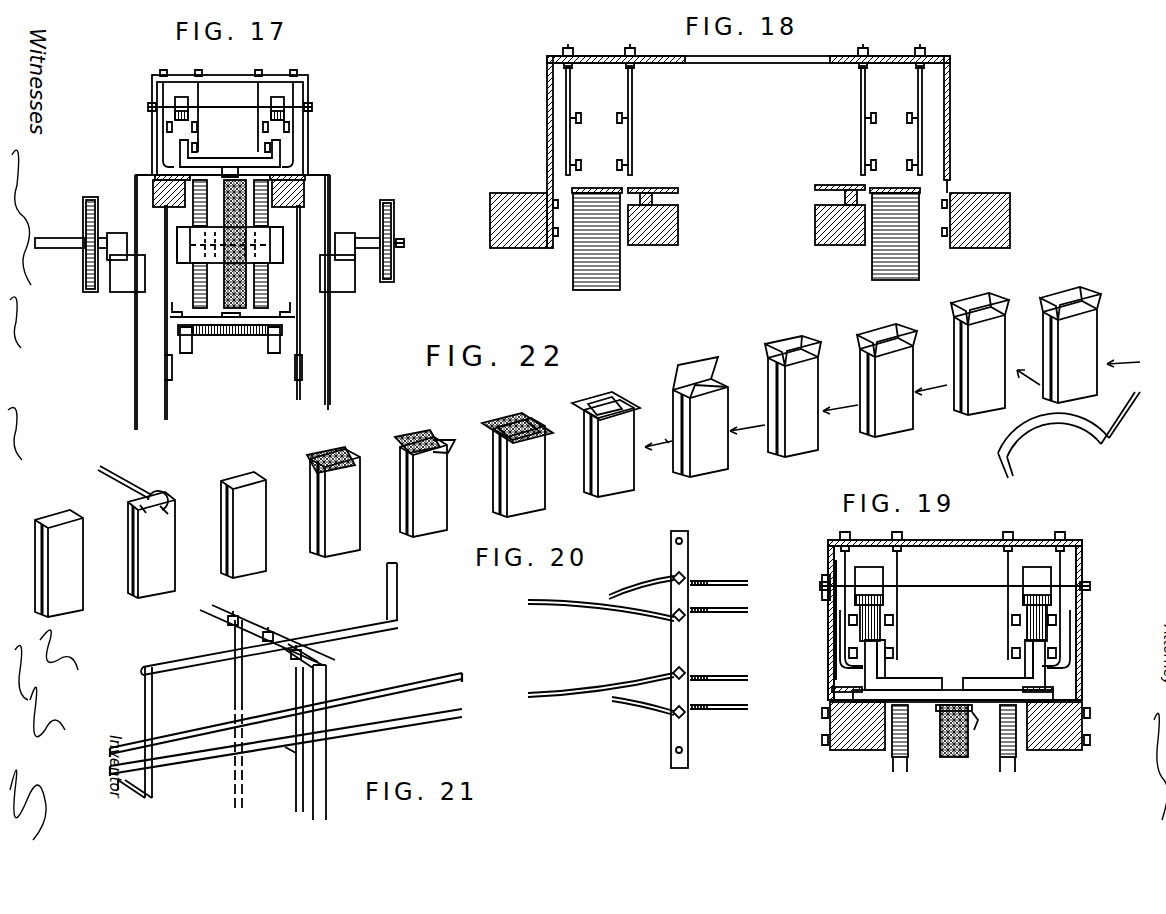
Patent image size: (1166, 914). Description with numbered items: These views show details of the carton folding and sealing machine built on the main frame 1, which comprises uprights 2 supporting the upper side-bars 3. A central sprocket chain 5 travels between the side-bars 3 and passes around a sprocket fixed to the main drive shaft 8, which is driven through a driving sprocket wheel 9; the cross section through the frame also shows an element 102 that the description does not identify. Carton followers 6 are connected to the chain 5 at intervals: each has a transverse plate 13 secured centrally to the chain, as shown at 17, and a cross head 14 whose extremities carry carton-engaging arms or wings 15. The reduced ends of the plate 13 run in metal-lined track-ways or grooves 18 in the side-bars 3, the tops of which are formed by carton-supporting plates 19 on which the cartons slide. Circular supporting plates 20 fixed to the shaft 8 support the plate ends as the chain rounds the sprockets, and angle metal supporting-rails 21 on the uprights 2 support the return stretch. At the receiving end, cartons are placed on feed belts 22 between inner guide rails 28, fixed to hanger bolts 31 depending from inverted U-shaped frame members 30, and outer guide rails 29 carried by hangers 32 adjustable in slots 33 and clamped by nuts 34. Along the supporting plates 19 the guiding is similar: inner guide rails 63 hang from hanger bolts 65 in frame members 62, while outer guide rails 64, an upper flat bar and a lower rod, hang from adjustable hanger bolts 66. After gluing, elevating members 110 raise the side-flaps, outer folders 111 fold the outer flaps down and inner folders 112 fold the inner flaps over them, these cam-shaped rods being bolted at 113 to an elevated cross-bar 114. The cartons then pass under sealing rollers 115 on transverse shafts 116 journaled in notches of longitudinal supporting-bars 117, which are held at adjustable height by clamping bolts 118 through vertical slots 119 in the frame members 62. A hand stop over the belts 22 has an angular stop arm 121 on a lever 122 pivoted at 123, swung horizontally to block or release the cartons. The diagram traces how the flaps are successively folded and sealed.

In FIG. 17, the main frame 1 is at (221, 285).
In FIG. 17, the uprights 2 is at (324, 352).
In FIG. 18, the uprights 2 is at (950, 154).
In FIG. 17, the upper side-bars 3 is at (160, 187).
In FIG. 18, the upper side-bars 3 is at (660, 246).
In FIG. 19, the upper side-bars 3 is at (850, 752).
In FIG. 19, the sprocket chain 5 is at (956, 758).
In FIG. 17, the carton followers 6 is at (185, 268).
In FIG. 19, the carton followers 6 is at (922, 690).
In FIG. 17, the main drive shaft 8 is at (405, 243).
In FIG. 17, the driving sprocket wheel 9 is at (392, 205).
In FIG. 17, the transverse plate 13 is at (200, 317).
In FIG. 19, the transverse plate 13 is at (925, 702).
In FIG. 17, the cross head 14 is at (240, 333).
In FIG. 17, the carton-engaging arms or wings 15 is at (187, 353).
In FIG. 19, the carton-engaging arms or wings 15 is at (1030, 652).
In FIG. 19, the securing point of plate to chain 17 is at (976, 728).
In FIG. 18, the track-ways or grooves 18 is at (672, 206).
In FIG. 19, the track-ways or grooves 18 is at (832, 710).
In FIG. 18, the carton-supporting plates 19 is at (668, 188).
In FIG. 19, the carton-supporting plates 19 is at (835, 690).
In FIG. 17, the circular supporting plates 20 is at (200, 272).
In FIG. 19, the circular supporting plates 20 is at (895, 760).
In FIG. 17, the angle metal supporting-rails 21 is at (167, 312).
In FIG. 18, the feed belts 22 is at (595, 190).
In FIG. 22, the feed belts 22 is at (1112, 405).
In FIG. 18, the inner guide rails 28 is at (622, 160).
In FIG. 21, the inner guide rails 28 is at (400, 688).
In FIG. 18, the outer guide rails 29 is at (580, 160).
In FIG. 21, the outer guide rails 29 is at (408, 722).
In FIG. 18, the inverted U-shaped frame members 30 is at (546, 92).
In FIG. 21, the inverted U-shaped frame members 30 is at (327, 690).
In FIG. 18, the hanger bolts 31 is at (861, 95).
In FIG. 21, the hanger bolts 31 is at (246, 700).
In FIG. 18, the hangers 32 is at (572, 108).
In FIG. 21, the hangers 32 is at (296, 790).
In FIG. 18, the slots 33 is at (580, 58).
In FIG. 18, the clamping nuts 34 is at (563, 52).
In FIG. 17, the frame members 62 is at (308, 86).
In FIG. 19, the frame members 62 is at (1000, 540).
In FIG. 19, the inner guide rails 63 is at (1008, 622).
In FIG. 17, the outer guide rails 64 is at (290, 155).
In FIG. 19, the outer guide rails 64 is at (860, 633).
In FIG. 17, the hanger bolts 65 is at (258, 80).
In FIG. 19, the hanger bolts 65 is at (902, 576).
In FIG. 19, the adjustable hanger bolts 66 is at (832, 550).
In FIG. 17, the sprocket 102 is at (83, 222).
In FIG. 20, the elevating members 110 is at (738, 589).
In FIG. 20, the outer side-flap-folding members 111 is at (616, 597).
In FIG. 20, the inner side-flap-folding members 112 is at (582, 690).
In FIG. 20, the bolts 113 is at (728, 656).
In FIG. 20, the elevated cross-bar 114 is at (690, 562).
In FIG. 17, the sealing rollers 115 is at (180, 97).
In FIG. 22, the sealing rollers 115 is at (155, 494).
In FIG. 19, the sealing rollers 115 is at (1038, 570).
In FIG. 17, the transverse shafts 116 is at (206, 106).
In FIG. 19, the transverse shafts 116 is at (962, 592).
In FIG. 19, the longitudinal supporting-bars 117 is at (850, 634).
In FIG. 19, the clamping bolts 118 is at (822, 586).
In FIG. 19, the vertical slots 119 is at (828, 598).
In FIG. 21, the angular stop arm 121 is at (155, 722).
In FIG. 21, the lever 122 is at (328, 628).
In FIG. 21, the pivot 123 is at (270, 630).